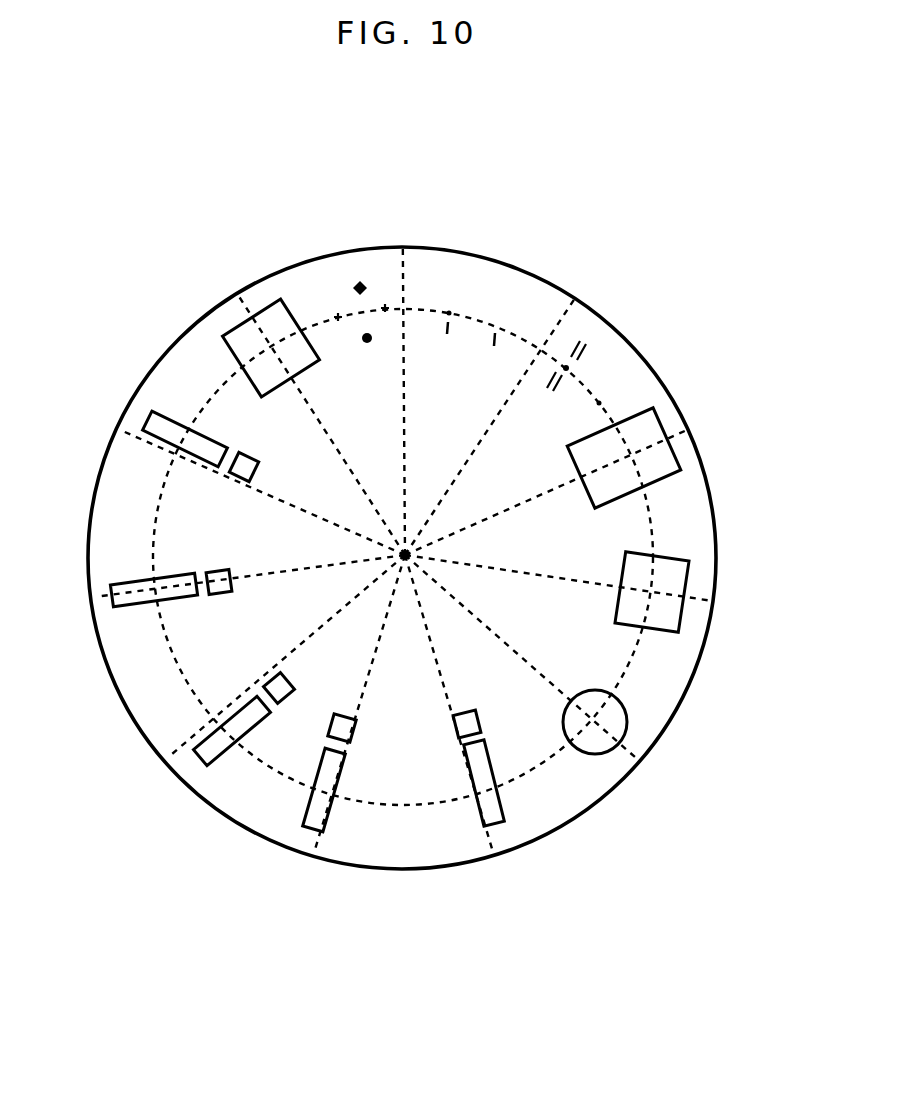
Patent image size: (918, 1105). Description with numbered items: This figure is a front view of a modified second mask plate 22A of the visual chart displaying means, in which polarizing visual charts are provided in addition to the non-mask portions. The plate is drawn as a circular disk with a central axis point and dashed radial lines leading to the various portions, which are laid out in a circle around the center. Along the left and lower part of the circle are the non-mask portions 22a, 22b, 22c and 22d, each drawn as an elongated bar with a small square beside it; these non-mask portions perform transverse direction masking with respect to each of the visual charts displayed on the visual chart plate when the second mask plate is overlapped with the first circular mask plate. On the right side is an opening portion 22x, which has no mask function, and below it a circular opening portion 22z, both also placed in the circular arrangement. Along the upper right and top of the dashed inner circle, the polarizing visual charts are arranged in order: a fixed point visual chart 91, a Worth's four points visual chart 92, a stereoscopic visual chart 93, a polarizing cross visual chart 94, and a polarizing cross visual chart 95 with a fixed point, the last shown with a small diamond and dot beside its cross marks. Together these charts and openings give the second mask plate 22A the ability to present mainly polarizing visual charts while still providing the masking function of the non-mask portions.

The second mask plate 22A is at (674, 383).
The non-mask portion 22a is at (172, 415).
The non-mask portion 22b is at (130, 605).
The non-mask portion 22c is at (218, 767).
The non-mask portion 22d is at (318, 832).
The opening portion 22x is at (662, 432).
The circular opening portion 22z is at (627, 707).
The fixed point visual chart 91 is at (603, 401).
The Worth's four points visual chart 92 is at (582, 348).
The stereoscopic visual chart 93 is at (510, 320).
The polarizing cross visual chart 94 is at (456, 299).
The polarizing cross visual chart with a fixed point 95 is at (362, 303).